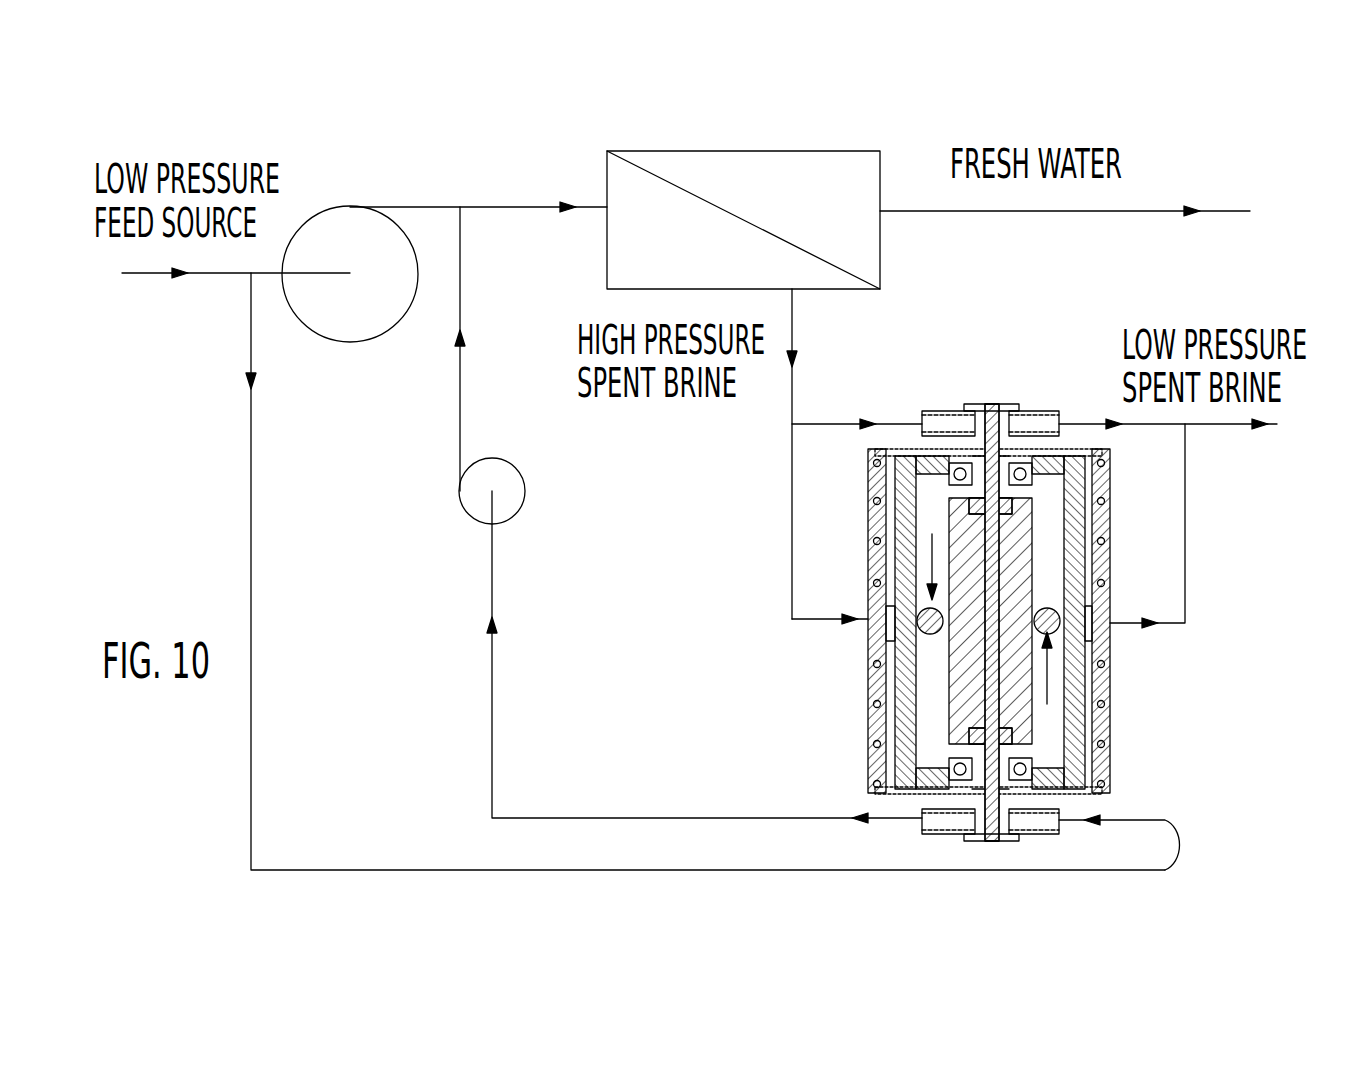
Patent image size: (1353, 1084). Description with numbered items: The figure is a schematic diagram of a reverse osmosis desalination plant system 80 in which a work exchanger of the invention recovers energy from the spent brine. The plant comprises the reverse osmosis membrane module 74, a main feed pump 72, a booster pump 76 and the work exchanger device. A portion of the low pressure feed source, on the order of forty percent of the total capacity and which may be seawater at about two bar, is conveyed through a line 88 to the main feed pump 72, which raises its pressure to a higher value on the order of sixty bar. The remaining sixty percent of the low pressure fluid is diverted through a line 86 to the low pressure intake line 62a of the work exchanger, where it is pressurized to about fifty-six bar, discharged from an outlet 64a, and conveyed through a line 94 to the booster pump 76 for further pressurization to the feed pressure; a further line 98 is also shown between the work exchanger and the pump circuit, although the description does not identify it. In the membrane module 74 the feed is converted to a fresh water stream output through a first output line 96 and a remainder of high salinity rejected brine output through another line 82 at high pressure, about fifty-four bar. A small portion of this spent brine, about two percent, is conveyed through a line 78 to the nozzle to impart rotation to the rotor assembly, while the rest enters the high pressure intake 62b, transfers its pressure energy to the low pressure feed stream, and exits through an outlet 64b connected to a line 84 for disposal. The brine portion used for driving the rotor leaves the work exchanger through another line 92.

The low pressure intake line 62a is at (1043, 834).
The high pressure intake 62b is at (920, 408).
The outlet 64a is at (917, 834).
The outlet 64b is at (1050, 408).
The main feed pump 72 is at (347, 342).
The reverse osmosis membrane module 74 is at (605, 170).
The booster pump 76 is at (465, 518).
The line 78 is at (797, 620).
The reverse osmosis desalination plant system 80 is at (1287, 162).
The line 82 is at (790, 323).
The line 84 is at (1092, 423).
The line 86 is at (249, 558).
The line 88 is at (200, 272).
The line 92 is at (1183, 578).
The line 94 is at (510, 206).
The first output line 96 is at (1087, 210).
The pressurized feed return line 98 is at (620, 817).